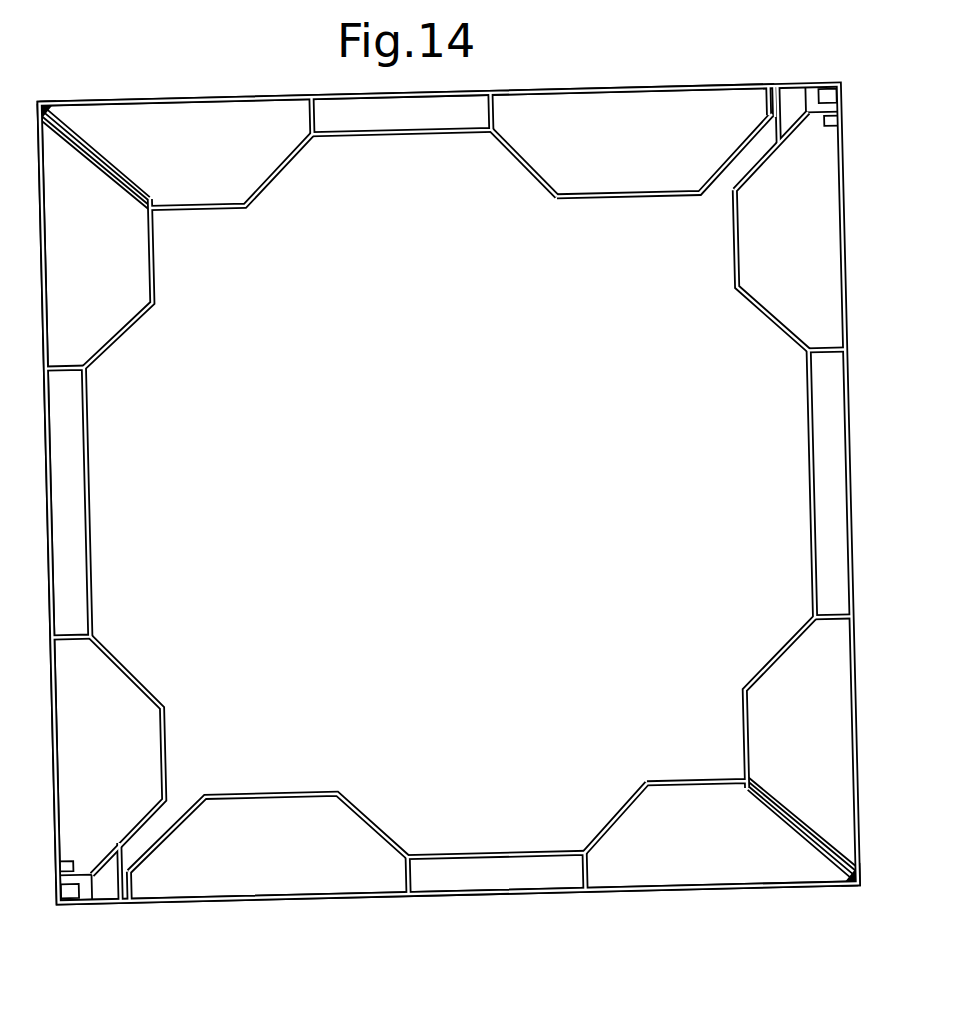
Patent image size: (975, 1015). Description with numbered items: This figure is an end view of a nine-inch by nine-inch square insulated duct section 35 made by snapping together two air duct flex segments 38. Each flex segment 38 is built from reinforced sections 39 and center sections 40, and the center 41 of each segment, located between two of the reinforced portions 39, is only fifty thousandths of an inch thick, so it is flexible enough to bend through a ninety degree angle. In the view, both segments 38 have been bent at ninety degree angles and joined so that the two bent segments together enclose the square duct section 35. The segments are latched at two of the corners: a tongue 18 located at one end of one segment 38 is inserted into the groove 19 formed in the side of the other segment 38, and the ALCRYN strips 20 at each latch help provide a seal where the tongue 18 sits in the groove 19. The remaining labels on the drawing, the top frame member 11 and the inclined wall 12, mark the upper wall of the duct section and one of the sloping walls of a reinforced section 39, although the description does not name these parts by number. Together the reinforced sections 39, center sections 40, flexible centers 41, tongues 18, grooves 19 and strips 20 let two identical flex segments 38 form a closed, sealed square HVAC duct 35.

The top frame member 11 is at (547, 88).
The inclined wall 12 is at (521, 168).
The tongue 18 is at (807, 85).
The groove 19 is at (791, 96).
The ALCRYN strips 20 is at (764, 112).
The square insulated duct section 35 is at (677, 66).
The air duct flex segment 38 is at (92, 484).
The reinforced sections 39 is at (600, 197).
The center sections 40 is at (393, 137).
The center of flex segment 41 is at (38, 101).